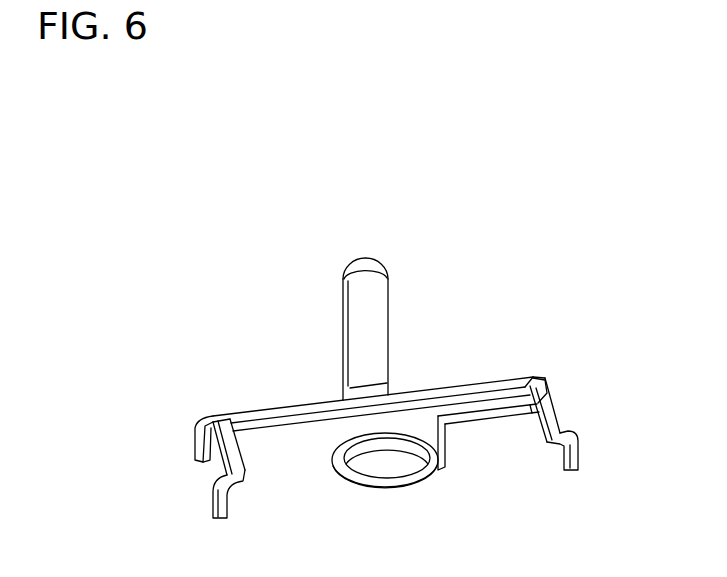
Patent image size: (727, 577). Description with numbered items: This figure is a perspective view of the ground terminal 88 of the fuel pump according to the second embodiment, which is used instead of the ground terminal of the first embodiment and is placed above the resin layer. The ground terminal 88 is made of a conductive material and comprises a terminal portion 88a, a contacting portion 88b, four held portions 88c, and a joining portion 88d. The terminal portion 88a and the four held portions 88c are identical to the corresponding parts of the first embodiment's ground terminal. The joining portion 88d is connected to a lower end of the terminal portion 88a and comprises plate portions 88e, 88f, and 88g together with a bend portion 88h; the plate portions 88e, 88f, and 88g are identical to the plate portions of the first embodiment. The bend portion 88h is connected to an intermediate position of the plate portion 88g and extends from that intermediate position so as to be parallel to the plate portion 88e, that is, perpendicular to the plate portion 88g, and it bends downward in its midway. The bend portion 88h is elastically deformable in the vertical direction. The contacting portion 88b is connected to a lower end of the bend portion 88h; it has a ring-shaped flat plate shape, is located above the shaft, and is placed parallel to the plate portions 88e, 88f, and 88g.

The ground terminal 88 is at (425, 242).
The terminal portion 88a is at (363, 283).
The contacting portion 88b is at (400, 490).
The held portions 88c is at (197, 440).
The joining portion 88d is at (287, 428).
The plate portion 88e is at (277, 405).
The plate portion 88f is at (223, 462).
The plate portion 88g is at (545, 415).
The bend portion 88h is at (492, 417).